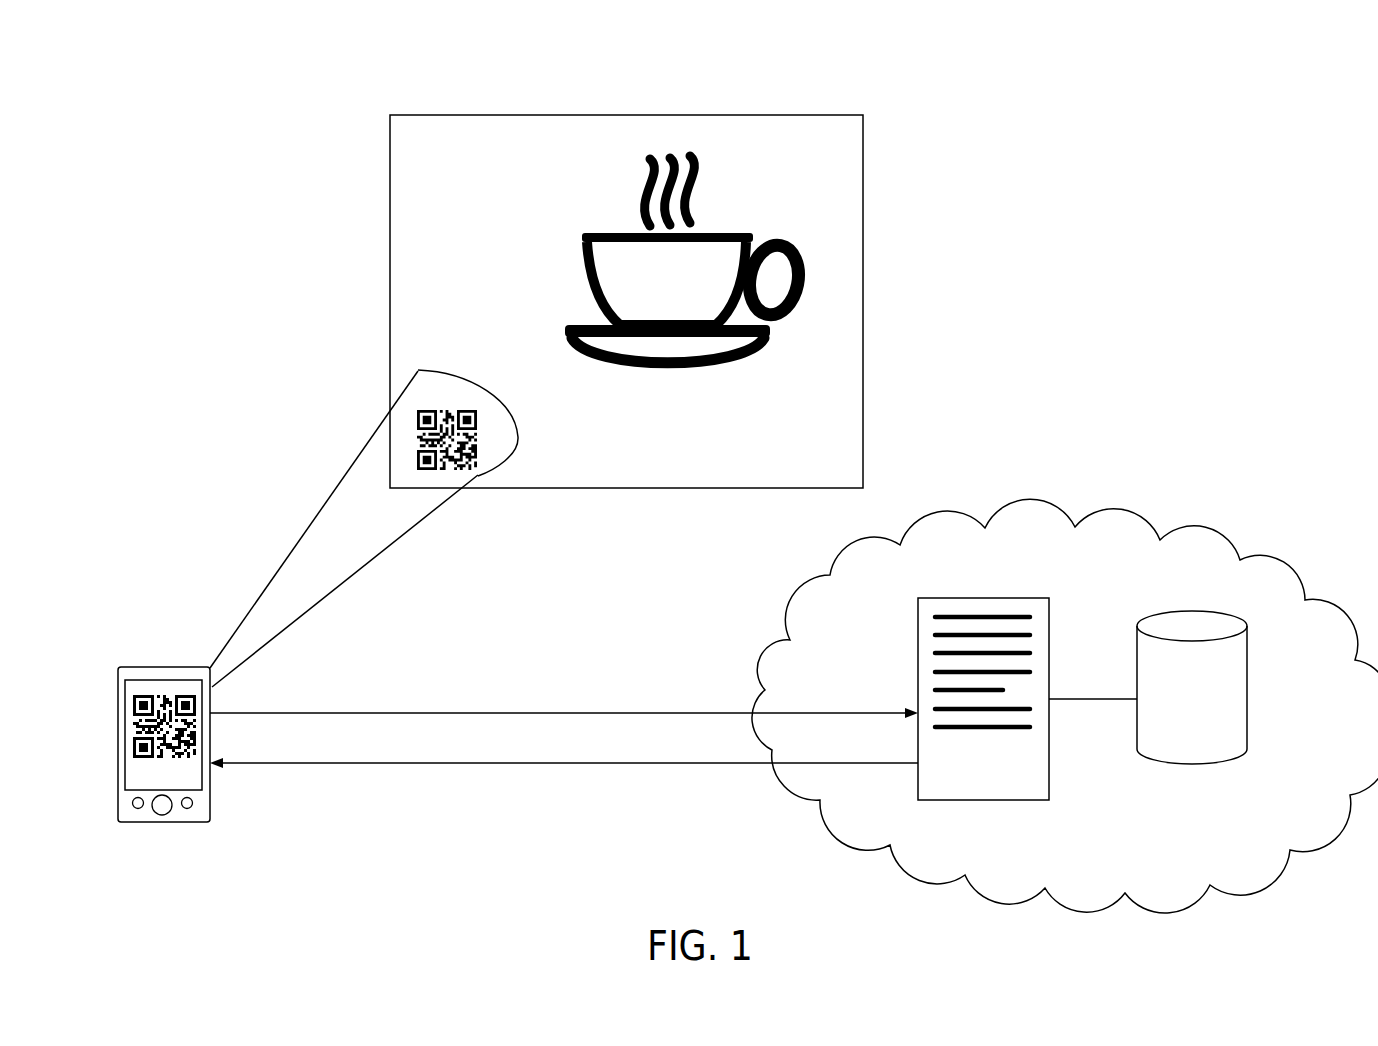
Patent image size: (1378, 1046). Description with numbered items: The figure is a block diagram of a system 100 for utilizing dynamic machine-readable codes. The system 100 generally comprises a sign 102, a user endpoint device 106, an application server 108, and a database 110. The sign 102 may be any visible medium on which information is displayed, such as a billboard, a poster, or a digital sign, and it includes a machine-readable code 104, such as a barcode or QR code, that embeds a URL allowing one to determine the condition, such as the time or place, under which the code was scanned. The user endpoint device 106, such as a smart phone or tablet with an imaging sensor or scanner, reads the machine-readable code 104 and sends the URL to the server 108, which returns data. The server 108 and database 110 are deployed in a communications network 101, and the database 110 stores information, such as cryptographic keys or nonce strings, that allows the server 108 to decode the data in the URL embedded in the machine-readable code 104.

The system 100 is at (90, 72).
The communications network 101 is at (1100, 856).
The sign 102 is at (645, 449).
The machine-readable code 104 is at (478, 474).
The user endpoint device 106 is at (157, 664).
The application server 108 is at (1001, 788).
The database 110 is at (1210, 705).